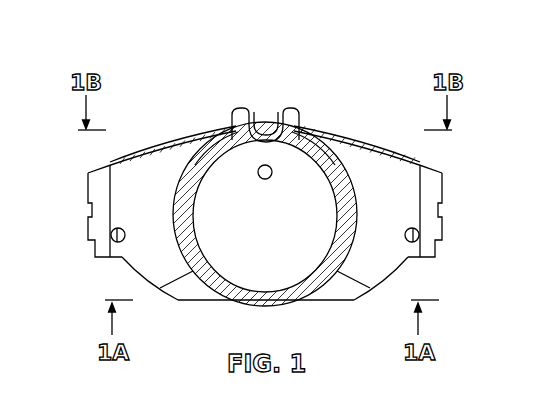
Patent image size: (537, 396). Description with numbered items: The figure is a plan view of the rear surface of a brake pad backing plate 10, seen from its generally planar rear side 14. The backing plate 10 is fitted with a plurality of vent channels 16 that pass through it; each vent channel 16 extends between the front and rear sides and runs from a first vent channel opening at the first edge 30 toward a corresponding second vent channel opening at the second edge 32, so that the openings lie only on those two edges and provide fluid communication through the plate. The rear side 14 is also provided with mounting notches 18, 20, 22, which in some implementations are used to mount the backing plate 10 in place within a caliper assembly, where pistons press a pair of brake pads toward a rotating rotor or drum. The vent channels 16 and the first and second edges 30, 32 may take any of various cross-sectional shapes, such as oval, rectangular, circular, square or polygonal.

The backing plate 10 is at (487, 86).
The rear side 14 is at (383, 170).
The vent channels 16 is at (187, 140).
The mounting notch 18 is at (88, 210).
The mounting notch 20 is at (263, 113).
The mounting notch 22 is at (445, 210).
The first edge 30 is at (358, 128).
The second edge 32 is at (200, 292).